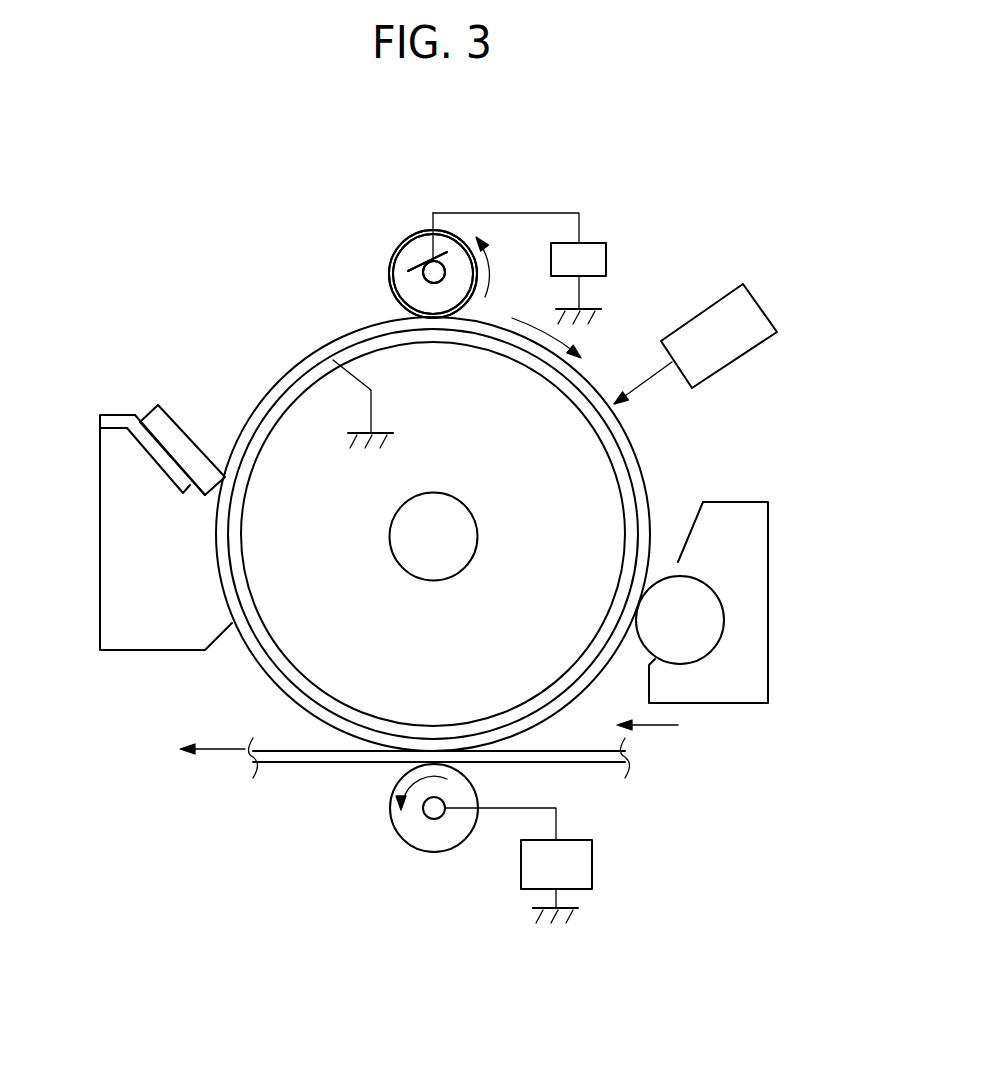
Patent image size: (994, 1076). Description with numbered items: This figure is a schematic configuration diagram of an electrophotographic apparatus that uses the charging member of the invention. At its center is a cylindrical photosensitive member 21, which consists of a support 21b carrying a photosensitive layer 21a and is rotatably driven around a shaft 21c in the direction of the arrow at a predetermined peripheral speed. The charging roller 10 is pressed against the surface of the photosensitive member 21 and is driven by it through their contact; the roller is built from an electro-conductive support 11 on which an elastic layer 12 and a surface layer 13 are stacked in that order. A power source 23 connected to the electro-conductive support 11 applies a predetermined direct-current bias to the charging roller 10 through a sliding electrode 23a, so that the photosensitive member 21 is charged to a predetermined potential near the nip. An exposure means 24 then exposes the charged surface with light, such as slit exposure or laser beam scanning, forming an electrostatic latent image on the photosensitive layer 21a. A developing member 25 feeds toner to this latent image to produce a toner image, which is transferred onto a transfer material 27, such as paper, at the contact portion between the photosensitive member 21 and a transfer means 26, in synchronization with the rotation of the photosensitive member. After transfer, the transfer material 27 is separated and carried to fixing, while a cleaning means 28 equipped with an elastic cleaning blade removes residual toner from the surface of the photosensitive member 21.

The charging roller 10 is at (316, 195).
The electro-conductive support 11 is at (430, 280).
The elastic layer 12 is at (402, 268).
The surface layer 13 is at (407, 243).
The photosensitive member 21 is at (186, 320).
The photosensitive layer 21a is at (303, 367).
The support 21b is at (287, 397).
The shaft 21c is at (432, 580).
The power source 23 is at (595, 243).
The sliding electrode 23a is at (433, 259).
The exposure means 24 is at (758, 296).
The developing member 25 is at (737, 512).
The transfer means 26 is at (417, 850).
The transfer material 27 is at (297, 763).
The cleaning means 28 is at (108, 580).